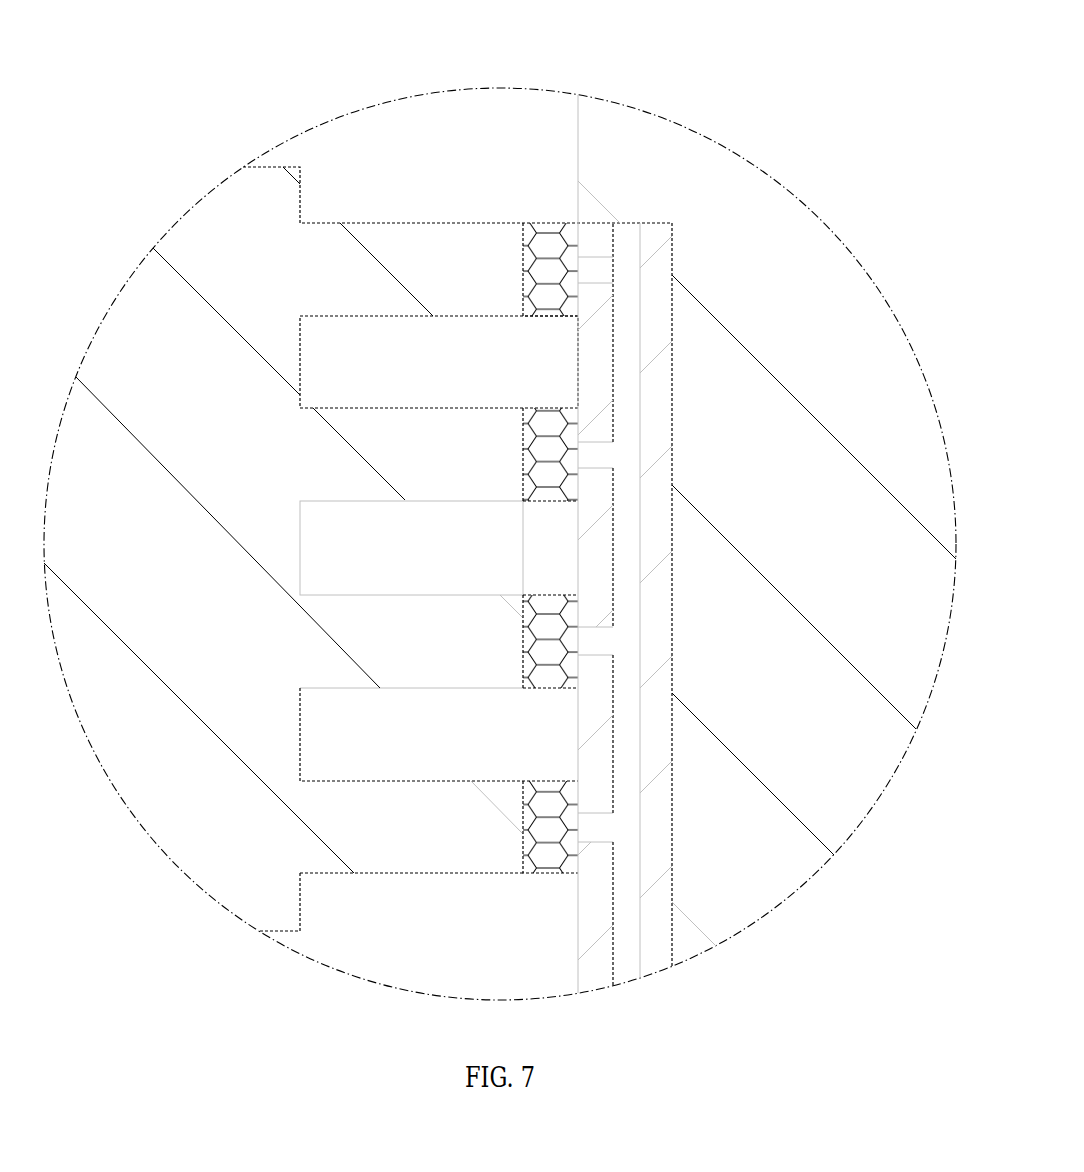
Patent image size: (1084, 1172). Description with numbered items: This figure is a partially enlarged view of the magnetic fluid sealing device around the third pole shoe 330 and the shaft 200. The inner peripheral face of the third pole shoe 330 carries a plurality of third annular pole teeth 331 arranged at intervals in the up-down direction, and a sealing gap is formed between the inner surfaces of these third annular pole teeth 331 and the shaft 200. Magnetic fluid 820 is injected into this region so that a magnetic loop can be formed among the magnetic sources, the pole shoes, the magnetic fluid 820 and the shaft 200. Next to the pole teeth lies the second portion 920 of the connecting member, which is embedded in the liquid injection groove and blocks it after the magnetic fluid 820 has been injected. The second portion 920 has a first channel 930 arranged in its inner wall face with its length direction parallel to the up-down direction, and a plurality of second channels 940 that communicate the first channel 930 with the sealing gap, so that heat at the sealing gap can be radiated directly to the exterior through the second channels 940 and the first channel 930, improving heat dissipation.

The shaft 200 is at (723, 160).
The third pole shoe 330 is at (192, 341).
The third annular pole teeth 331 is at (403, 247).
The magnetic fluid 820 is at (535, 235).
The second portion 920 is at (677, 308).
The first channel 930 is at (643, 507).
The second channel 940 is at (603, 241).